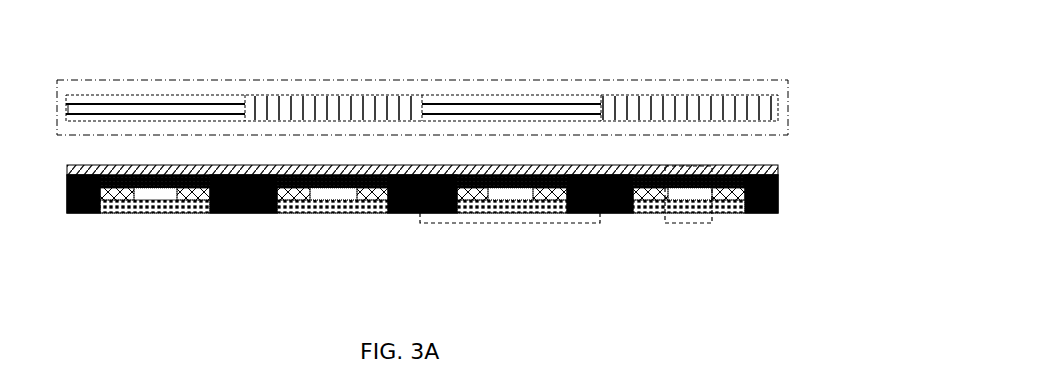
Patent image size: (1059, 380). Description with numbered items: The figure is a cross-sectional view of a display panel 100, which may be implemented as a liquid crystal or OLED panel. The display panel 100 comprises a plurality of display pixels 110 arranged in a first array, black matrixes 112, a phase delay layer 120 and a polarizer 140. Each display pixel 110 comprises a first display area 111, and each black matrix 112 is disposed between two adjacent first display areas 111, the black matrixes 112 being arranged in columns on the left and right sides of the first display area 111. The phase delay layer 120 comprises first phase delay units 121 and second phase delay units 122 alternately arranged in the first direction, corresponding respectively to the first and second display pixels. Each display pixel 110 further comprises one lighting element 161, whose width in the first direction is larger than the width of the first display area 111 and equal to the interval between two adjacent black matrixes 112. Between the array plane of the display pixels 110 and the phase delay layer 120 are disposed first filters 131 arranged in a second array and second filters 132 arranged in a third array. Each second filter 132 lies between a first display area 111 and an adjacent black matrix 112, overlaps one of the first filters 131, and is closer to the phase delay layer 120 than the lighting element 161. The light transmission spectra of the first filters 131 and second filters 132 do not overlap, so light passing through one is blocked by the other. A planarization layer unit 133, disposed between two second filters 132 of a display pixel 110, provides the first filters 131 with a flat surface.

The display panel 100 is at (757, 36).
The display pixel 110 is at (510, 262).
The first display area 111 is at (728, 238).
The black matrix 112 is at (482, 210).
The phase delay layer 120 is at (474, 95).
The first phase delay unit 121 is at (333, 74).
The second phase delay unit 122 is at (478, 127).
The first filter 131 is at (410, 238).
The second filter 132 is at (386, 222).
The planarization layer unit 133 is at (423, 232).
The polarizer 140 is at (482, 188).
The lighting element 161 is at (398, 250).